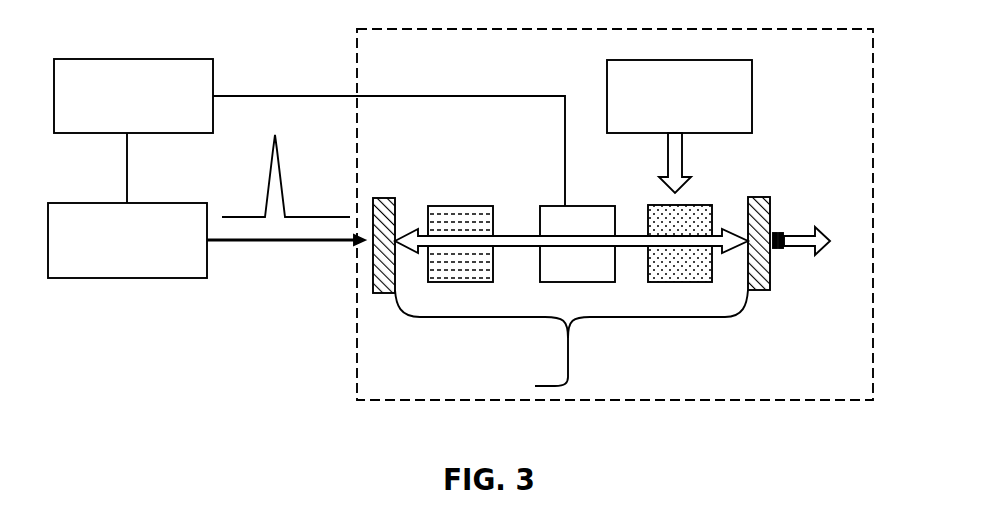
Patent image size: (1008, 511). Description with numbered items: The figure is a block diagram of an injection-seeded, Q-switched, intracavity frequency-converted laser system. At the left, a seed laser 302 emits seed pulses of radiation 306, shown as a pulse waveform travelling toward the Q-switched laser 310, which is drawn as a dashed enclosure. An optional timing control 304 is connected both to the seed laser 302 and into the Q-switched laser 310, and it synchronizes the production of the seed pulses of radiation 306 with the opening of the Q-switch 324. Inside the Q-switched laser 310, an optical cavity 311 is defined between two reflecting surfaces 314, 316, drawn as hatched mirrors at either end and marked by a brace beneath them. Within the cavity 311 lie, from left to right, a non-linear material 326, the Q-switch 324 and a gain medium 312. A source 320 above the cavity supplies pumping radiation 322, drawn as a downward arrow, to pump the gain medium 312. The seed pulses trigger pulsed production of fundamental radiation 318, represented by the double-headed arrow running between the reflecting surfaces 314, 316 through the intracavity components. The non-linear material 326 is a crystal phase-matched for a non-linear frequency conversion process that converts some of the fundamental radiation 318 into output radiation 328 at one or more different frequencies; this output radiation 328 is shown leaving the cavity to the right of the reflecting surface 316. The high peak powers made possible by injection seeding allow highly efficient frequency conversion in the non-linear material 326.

The seed laser 302 is at (168, 278).
The timing control 304 is at (167, 59).
The seed pulses of radiation 306 is at (265, 243).
The Q-switched laser 310 is at (357, 343).
The optical cavity 311 is at (571, 344).
The gain medium 312 is at (660, 205).
The reflecting surface 314 is at (413, 199).
The reflecting surface 316 is at (723, 199).
The fundamental radiation 318 is at (517, 247).
The source 320 is at (752, 82).
The pumping radiation 322 is at (682, 157).
The Q-switch 324 is at (577, 282).
The non-linear material 326 is at (458, 205).
The output radiation 328 is at (798, 250).